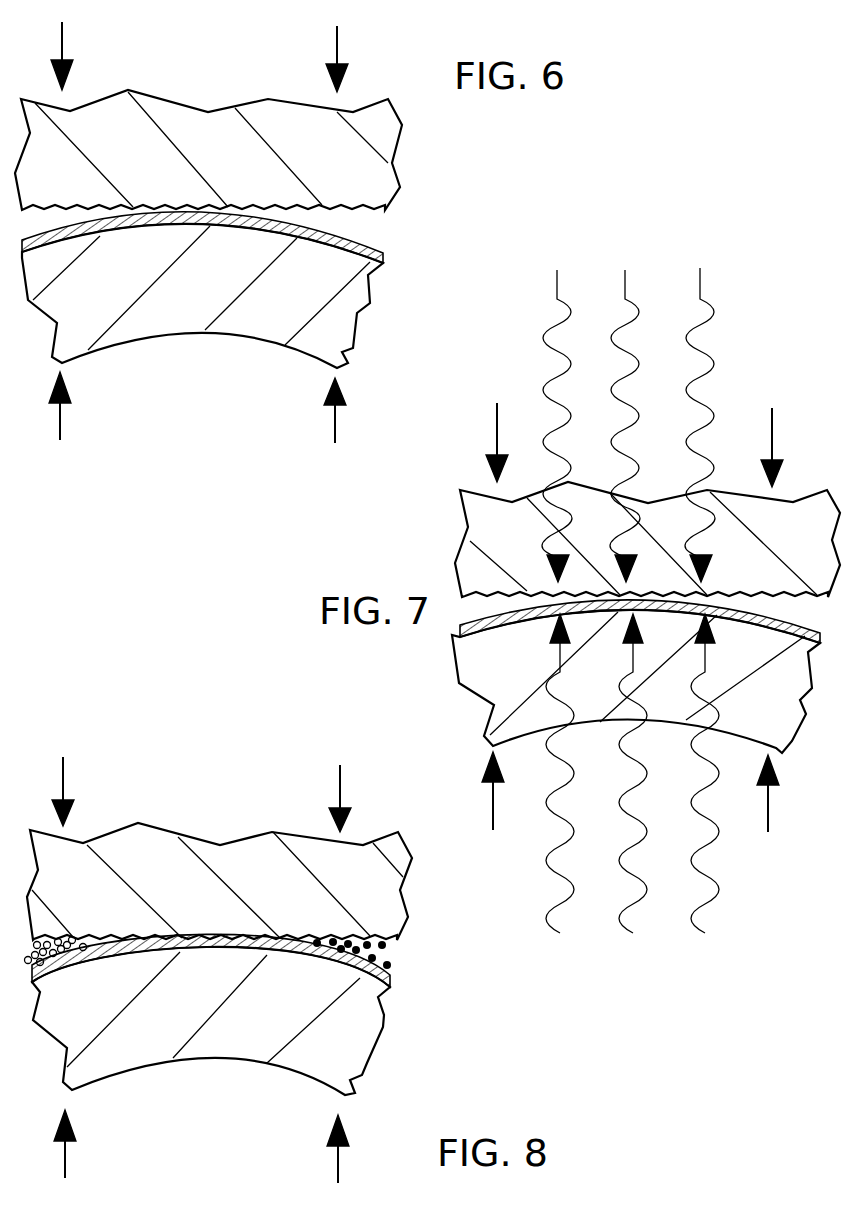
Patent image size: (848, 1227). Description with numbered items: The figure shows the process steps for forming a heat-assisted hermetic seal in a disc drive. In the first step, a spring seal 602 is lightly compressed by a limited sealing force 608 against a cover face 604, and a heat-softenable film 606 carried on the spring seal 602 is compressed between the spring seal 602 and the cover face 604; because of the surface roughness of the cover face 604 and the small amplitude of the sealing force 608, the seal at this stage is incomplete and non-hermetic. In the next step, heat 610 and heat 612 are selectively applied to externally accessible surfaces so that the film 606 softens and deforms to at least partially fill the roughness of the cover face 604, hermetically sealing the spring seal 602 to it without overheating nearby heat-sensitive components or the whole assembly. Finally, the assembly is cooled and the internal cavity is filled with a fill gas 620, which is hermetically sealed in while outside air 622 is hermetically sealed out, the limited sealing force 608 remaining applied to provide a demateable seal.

In FIG. 6, the spring seal 602 is at (147, 337).
In FIG. 7, the spring seal 602 is at (464, 693).
In FIG. 8, the spring seal 602 is at (172, 1058).
In FIG. 6, the cover face 604 is at (267, 203).
In FIG. 7, the cover face 604 is at (553, 595).
In FIG. 8, the cover face 604 is at (147, 938).
In FIG. 6, the film 606 is at (383, 248).
In FIG. 7, the film 606 is at (455, 627).
In FIG. 8, the film 606 is at (388, 987).
In FIG. 6, the sealing force 608 is at (63, 42).
In FIG. 7, the sealing force 608 is at (632, 617).
In FIG. 8, the sealing force 608 is at (65, 782).
In FIG. 7, the heat 610 is at (703, 345).
In FIG. 7, the heat 612 is at (720, 852).
In FIG. 8, the fill gas 620 is at (28, 957).
In FIG. 8, the air 622 is at (392, 963).